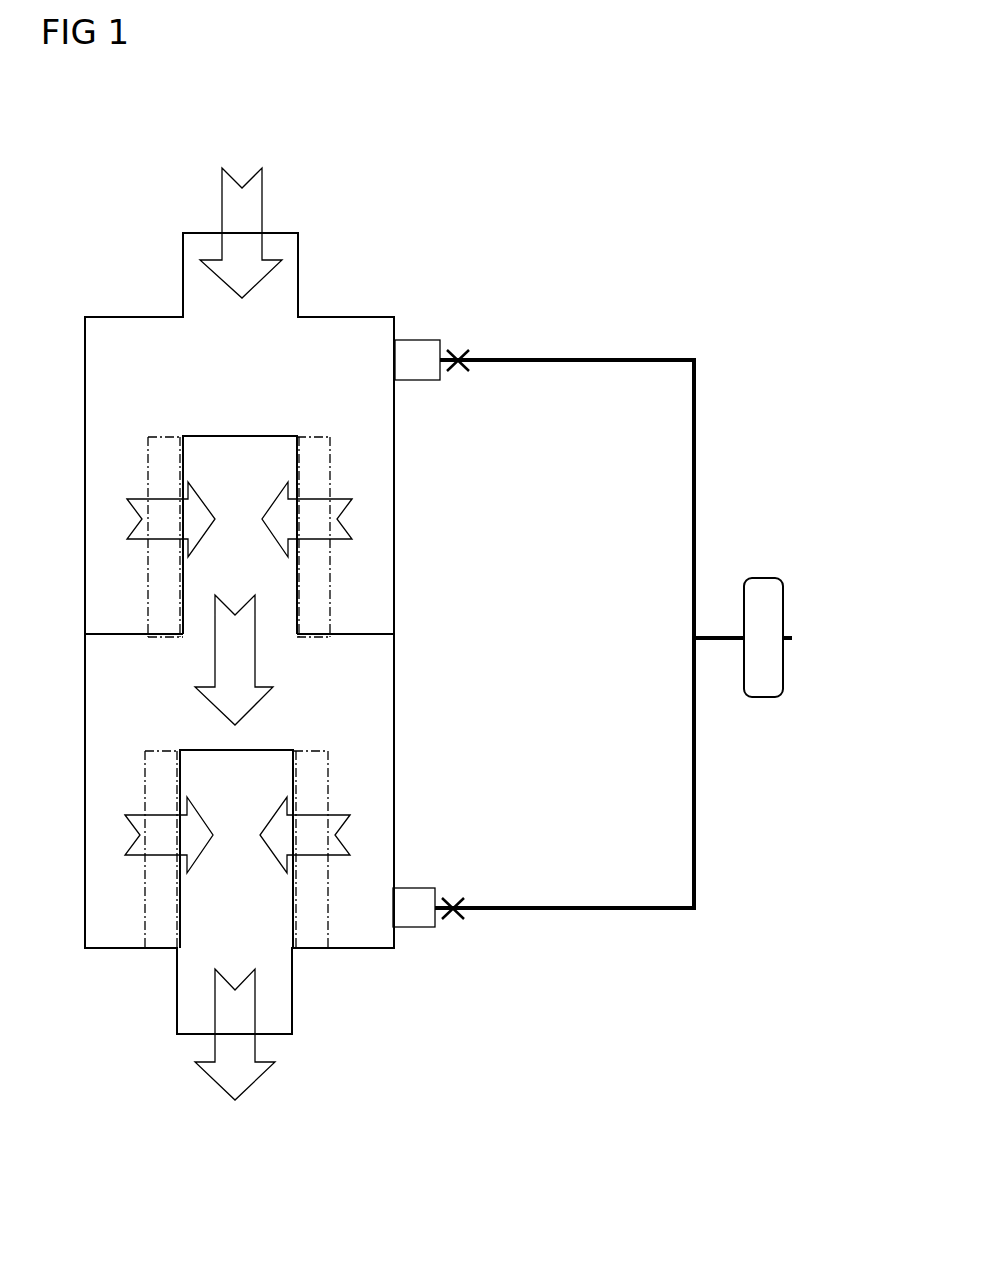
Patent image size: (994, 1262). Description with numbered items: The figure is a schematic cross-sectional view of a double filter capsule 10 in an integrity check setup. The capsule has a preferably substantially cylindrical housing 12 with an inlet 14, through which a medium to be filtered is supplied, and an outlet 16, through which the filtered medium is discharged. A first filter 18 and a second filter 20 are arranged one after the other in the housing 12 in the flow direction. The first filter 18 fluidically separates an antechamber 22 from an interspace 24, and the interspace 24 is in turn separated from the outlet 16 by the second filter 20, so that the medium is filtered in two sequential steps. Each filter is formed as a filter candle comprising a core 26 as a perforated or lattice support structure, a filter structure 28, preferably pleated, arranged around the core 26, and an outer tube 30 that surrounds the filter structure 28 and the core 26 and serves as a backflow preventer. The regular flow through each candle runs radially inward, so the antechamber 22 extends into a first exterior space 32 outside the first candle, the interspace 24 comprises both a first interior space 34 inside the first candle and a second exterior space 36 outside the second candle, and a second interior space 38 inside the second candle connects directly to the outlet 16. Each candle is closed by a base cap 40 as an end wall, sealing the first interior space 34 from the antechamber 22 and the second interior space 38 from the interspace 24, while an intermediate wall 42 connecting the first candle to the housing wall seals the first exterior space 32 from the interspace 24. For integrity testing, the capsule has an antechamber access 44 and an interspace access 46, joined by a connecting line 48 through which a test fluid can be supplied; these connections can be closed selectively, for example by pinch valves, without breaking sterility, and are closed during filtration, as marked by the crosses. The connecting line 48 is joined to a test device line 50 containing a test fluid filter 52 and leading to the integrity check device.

The double filter capsule 10 is at (80, 230).
The housing 12 is at (395, 485).
The inlet 14 is at (299, 247).
The outlet 16 is at (292, 1010).
The first filter 18 is at (320, 408).
The second filter 20 is at (318, 722).
The antechamber 22 is at (134, 382).
The interspace 24 is at (159, 724).
The core 26 is at (192, 465).
The filter structure 28 is at (157, 621).
The outer tube 30 is at (138, 465).
The first exterior space 32 is at (102, 575).
The first interior space 34 is at (229, 575).
The second exterior space 36 is at (105, 892).
The second interior space 38 is at (227, 892).
The base cap 40 is at (256, 436).
The intermediate wall 42 is at (110, 637).
The antechamber access 44 is at (424, 373).
The interspace access 46 is at (415, 920).
The connecting line 48 is at (694, 856).
The test device line 50 is at (700, 641).
The test fluid filter 52 is at (776, 680).